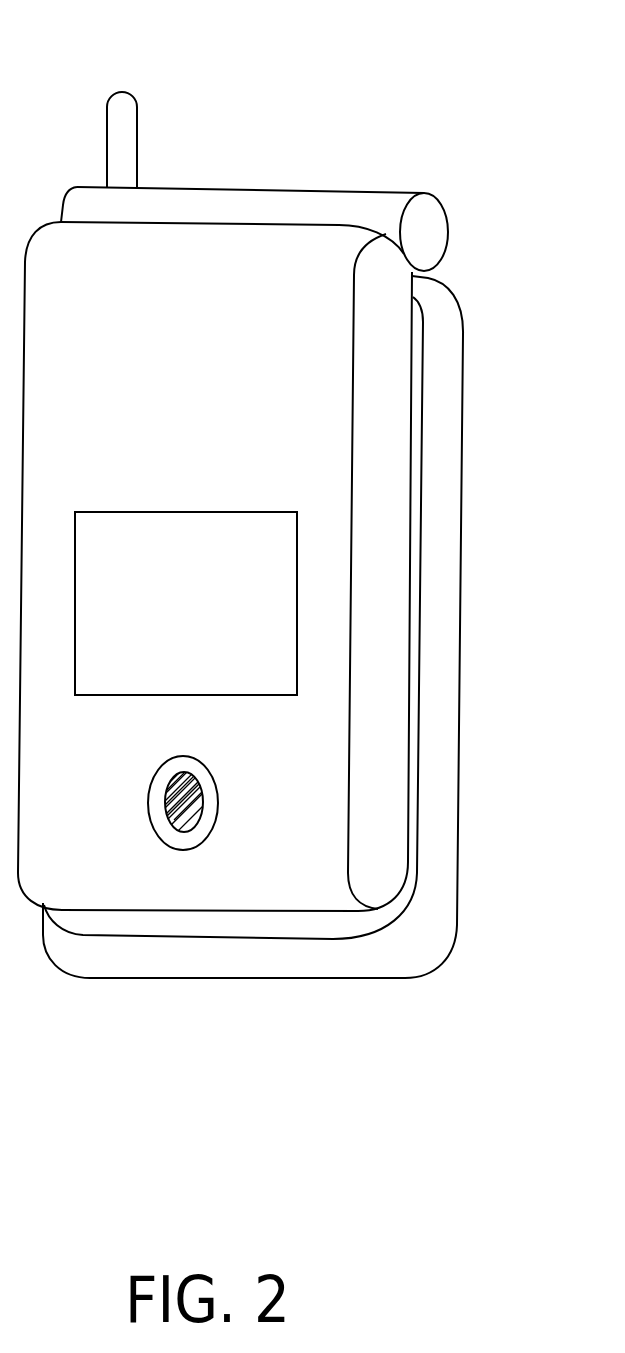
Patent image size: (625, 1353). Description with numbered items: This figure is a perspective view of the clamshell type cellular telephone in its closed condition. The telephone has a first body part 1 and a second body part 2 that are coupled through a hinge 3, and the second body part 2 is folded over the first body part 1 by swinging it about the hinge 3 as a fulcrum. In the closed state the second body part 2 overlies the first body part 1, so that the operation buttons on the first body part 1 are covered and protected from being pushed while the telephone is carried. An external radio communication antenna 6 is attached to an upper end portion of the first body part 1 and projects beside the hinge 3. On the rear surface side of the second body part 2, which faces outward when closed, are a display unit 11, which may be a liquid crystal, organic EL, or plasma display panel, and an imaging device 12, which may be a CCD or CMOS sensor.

The first body part 1 is at (440, 713).
The second body part 2 is at (382, 853).
The hinge 3 is at (449, 228).
The external radio communication antenna 6 is at (122, 85).
The display unit 11 is at (243, 599).
The imaging device 12 is at (200, 797).